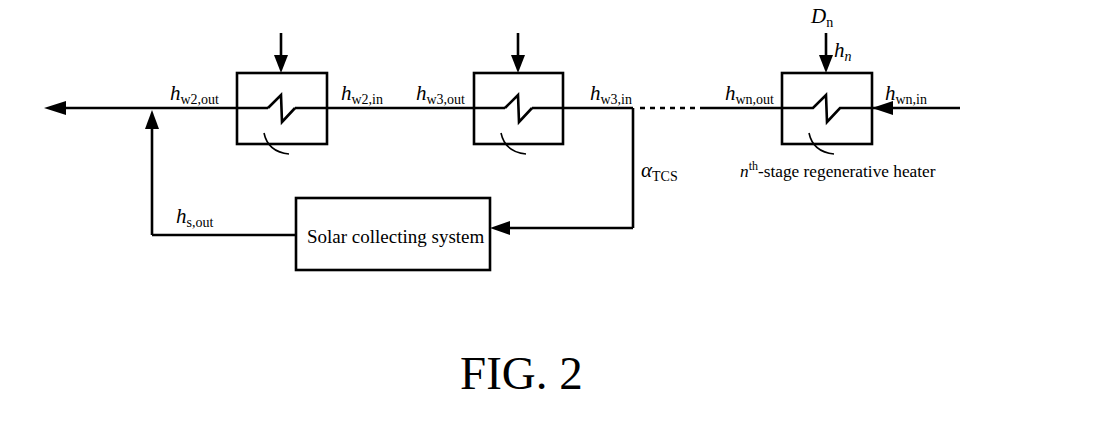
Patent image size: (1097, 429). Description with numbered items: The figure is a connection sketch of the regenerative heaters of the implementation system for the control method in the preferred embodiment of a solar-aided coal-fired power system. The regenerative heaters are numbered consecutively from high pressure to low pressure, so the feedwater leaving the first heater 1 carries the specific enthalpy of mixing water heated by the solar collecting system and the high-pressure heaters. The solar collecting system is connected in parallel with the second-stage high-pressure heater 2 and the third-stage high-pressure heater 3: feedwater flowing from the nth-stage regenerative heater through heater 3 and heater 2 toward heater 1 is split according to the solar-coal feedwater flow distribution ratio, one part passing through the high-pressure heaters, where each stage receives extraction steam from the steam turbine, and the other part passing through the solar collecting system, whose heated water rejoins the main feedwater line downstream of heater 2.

The outlet water enthalpy line h_w1,in toward first-stage heater 1 is at (98, 98).
The second-stage high-pressure heater 2 is at (275, 90).
The third-stage high-pressure heater 3 is at (517, 90).